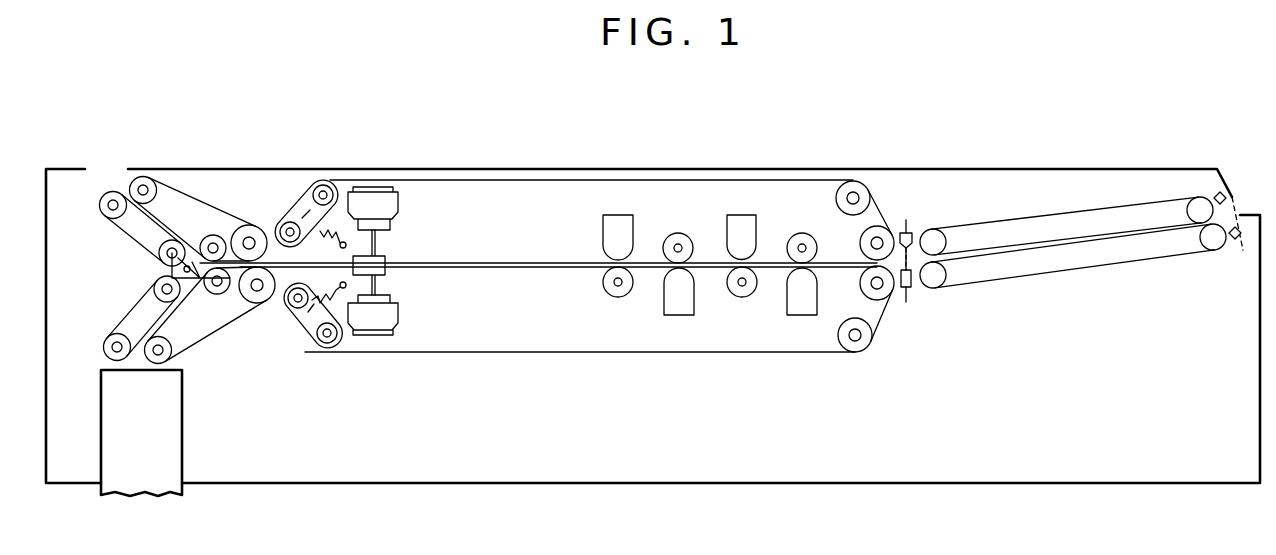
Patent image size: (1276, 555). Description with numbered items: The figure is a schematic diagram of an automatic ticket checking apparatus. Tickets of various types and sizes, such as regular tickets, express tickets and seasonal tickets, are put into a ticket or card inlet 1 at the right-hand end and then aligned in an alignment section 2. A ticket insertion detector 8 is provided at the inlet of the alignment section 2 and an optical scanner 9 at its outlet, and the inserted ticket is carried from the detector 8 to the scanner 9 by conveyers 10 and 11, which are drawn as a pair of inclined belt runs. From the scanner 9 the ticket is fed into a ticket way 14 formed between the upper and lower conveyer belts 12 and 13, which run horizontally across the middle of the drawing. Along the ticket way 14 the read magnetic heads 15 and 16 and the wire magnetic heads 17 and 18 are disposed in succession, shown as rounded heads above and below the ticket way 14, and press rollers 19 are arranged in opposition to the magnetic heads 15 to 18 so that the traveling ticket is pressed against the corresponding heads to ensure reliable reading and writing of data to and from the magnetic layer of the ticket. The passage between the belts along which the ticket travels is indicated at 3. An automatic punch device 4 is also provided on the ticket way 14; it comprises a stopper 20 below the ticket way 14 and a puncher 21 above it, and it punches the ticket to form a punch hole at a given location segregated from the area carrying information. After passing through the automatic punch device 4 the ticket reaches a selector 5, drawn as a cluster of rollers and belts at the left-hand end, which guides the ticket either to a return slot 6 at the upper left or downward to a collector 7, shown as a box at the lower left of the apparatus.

The ticket or card inlet 1 is at (1237, 192).
The alignment section 2 is at (1073, 223).
The conveying path 3 is at (655, 188).
The automatic punch device 4 is at (395, 247).
The selector 5 is at (193, 283).
The return slot 6 is at (118, 183).
The collector 7 is at (175, 440).
The ticket insertion detector 8 is at (1207, 202).
The optical scanner 9 is at (913, 252).
The conveyer 10 is at (1092, 208).
The conveyer 11 is at (1068, 272).
The conveyer belt 12 is at (487, 177).
The conveyer belt 13 is at (525, 352).
The ticket way 14 is at (520, 267).
The read magnetic head 15 is at (797, 317).
The read magnetic head 16 is at (740, 215).
The wire magnetic head 17 is at (678, 310).
The wire magnetic head 18 is at (615, 215).
The press rollers 19 is at (678, 233).
The stopper 20 is at (385, 317).
The puncher 21 is at (367, 202).